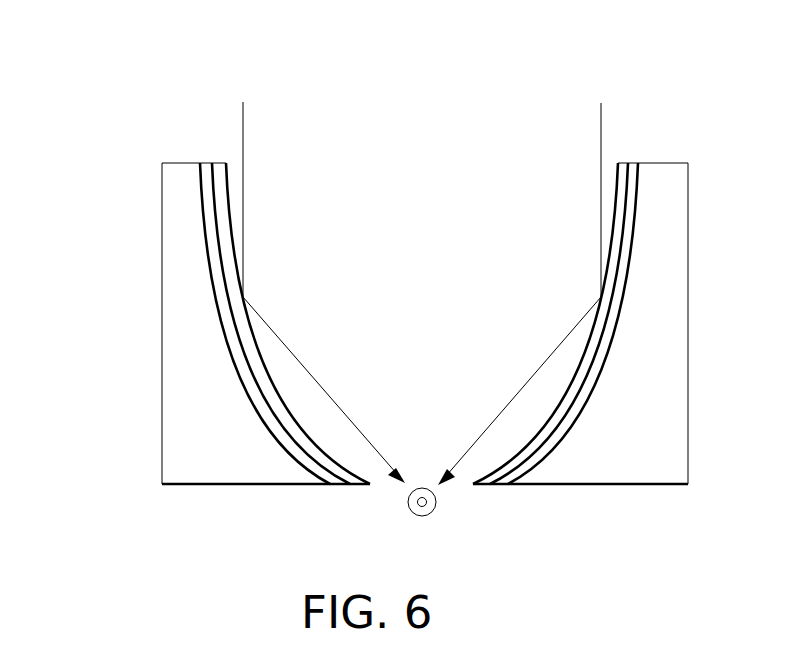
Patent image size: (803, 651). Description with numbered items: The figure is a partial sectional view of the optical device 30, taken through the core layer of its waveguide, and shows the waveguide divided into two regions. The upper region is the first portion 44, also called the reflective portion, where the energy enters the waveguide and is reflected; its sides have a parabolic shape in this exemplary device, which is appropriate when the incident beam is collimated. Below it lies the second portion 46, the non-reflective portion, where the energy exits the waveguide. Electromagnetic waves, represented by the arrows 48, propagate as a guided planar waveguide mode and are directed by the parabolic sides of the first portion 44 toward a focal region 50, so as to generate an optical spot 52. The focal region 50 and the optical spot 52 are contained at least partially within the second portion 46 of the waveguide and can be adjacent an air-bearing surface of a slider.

The optical device 30 is at (182, 115).
The first portion 44 is at (148, 163).
The second portion 46 is at (150, 480).
The electromagnetic waves 48 is at (422, 293).
The focal region 50 is at (410, 500).
The optical spot 52 is at (413, 502).